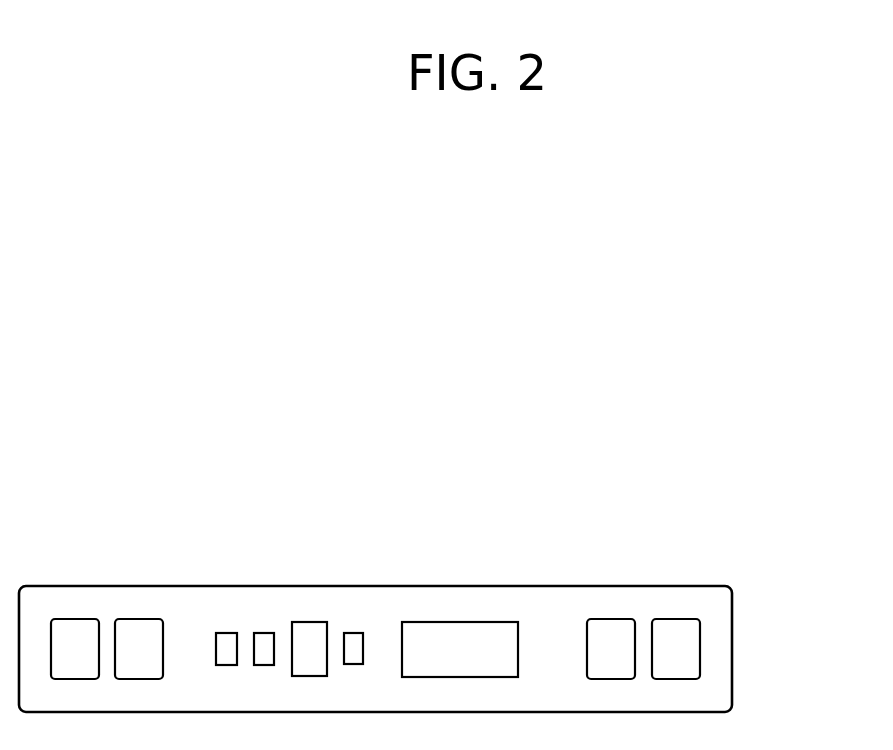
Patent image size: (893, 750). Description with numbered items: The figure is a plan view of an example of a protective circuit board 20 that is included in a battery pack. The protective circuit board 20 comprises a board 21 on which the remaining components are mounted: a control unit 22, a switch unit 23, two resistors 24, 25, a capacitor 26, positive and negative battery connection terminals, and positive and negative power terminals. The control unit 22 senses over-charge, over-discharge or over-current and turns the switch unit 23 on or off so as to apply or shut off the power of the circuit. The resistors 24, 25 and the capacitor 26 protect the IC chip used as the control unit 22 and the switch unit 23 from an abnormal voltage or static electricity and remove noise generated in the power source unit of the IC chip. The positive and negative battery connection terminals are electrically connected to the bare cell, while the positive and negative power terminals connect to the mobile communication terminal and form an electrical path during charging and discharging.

The protective circuit board 20 is at (838, 403).
The board 21 is at (720, 650).
The control unit 22 is at (312, 622).
The switch unit 23 is at (458, 622).
The resistor 24 is at (226, 633).
The resistor 25 is at (264, 633).
The capacitor 26 is at (353, 633).